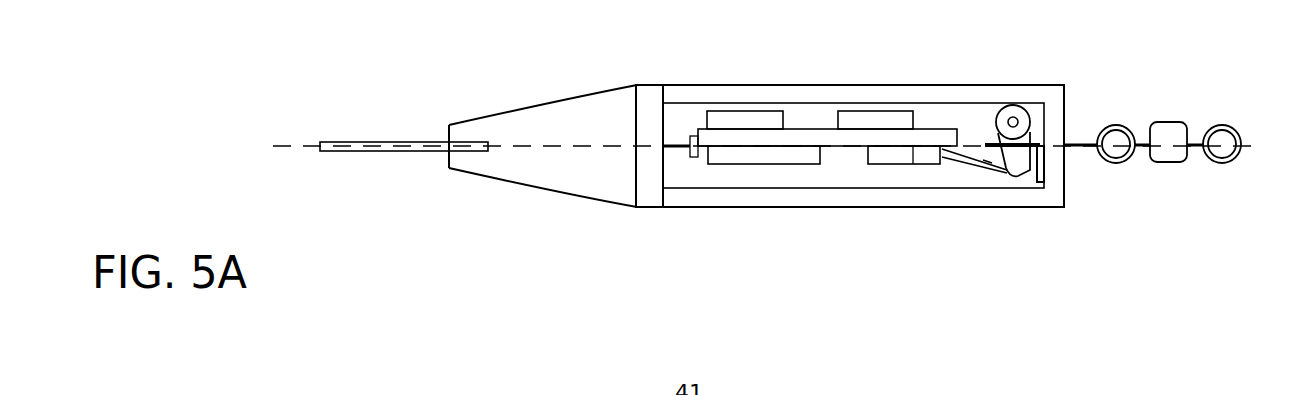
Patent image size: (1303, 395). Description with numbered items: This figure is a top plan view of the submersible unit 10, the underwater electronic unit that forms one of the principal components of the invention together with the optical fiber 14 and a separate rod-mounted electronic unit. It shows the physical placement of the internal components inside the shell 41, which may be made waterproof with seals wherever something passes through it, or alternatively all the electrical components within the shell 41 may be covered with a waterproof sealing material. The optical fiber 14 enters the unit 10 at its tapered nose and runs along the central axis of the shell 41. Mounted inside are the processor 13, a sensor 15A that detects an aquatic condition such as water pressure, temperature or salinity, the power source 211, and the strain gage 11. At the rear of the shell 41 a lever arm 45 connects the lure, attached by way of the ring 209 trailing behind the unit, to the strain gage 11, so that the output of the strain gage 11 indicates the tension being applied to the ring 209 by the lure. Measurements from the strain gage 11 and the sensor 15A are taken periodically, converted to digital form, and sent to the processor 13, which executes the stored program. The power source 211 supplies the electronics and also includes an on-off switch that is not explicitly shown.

The submersible unit 10 is at (502, 92).
The shell 41 is at (790, 88).
The optical fiber 14 is at (415, 152).
The processor 13 is at (730, 111).
The sensor 15A is at (873, 111).
The power source 211 is at (768, 164).
The strain gage 11 is at (908, 164).
The lever arm 45 is at (1027, 110).
The ring 209 is at (1115, 123).